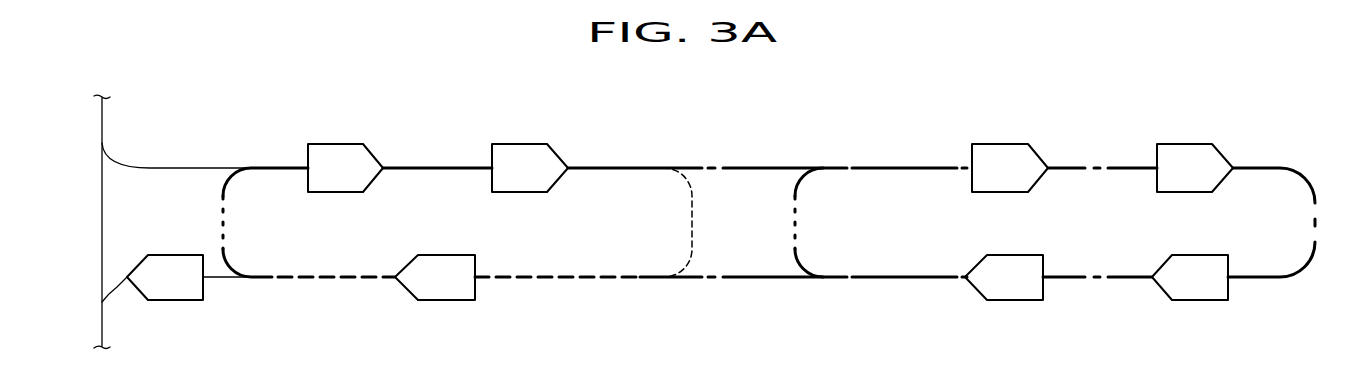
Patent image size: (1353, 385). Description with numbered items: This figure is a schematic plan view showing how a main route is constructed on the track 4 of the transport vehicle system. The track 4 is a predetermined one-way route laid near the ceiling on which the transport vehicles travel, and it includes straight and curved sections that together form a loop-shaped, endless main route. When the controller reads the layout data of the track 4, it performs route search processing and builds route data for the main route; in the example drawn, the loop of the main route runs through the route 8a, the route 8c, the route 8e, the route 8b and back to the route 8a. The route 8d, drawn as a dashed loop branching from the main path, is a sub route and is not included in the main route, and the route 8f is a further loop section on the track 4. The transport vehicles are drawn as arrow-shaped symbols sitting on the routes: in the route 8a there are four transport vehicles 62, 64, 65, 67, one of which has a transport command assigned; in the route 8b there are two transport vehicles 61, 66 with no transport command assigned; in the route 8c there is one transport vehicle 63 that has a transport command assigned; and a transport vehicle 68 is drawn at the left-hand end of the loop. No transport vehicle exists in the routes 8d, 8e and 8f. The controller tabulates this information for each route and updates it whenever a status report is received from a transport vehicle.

The track 4 is at (171, 114).
The transport vehicle 61 is at (337, 143).
The transport vehicle 62 is at (1200, 301).
The transport vehicle 63 is at (442, 301).
The transport vehicle 64 is at (995, 143).
The transport vehicle 65 is at (1013, 301).
The transport vehicle 66 is at (522, 143).
The transport vehicle 67 is at (1190, 143).
The transport vehicle 68 is at (173, 301).
The route 8a is at (872, 166).
The route 8b is at (613, 166).
The route 8c is at (565, 281).
The route 8d is at (690, 222).
The route 8e is at (226, 230).
The route 8f is at (797, 215).